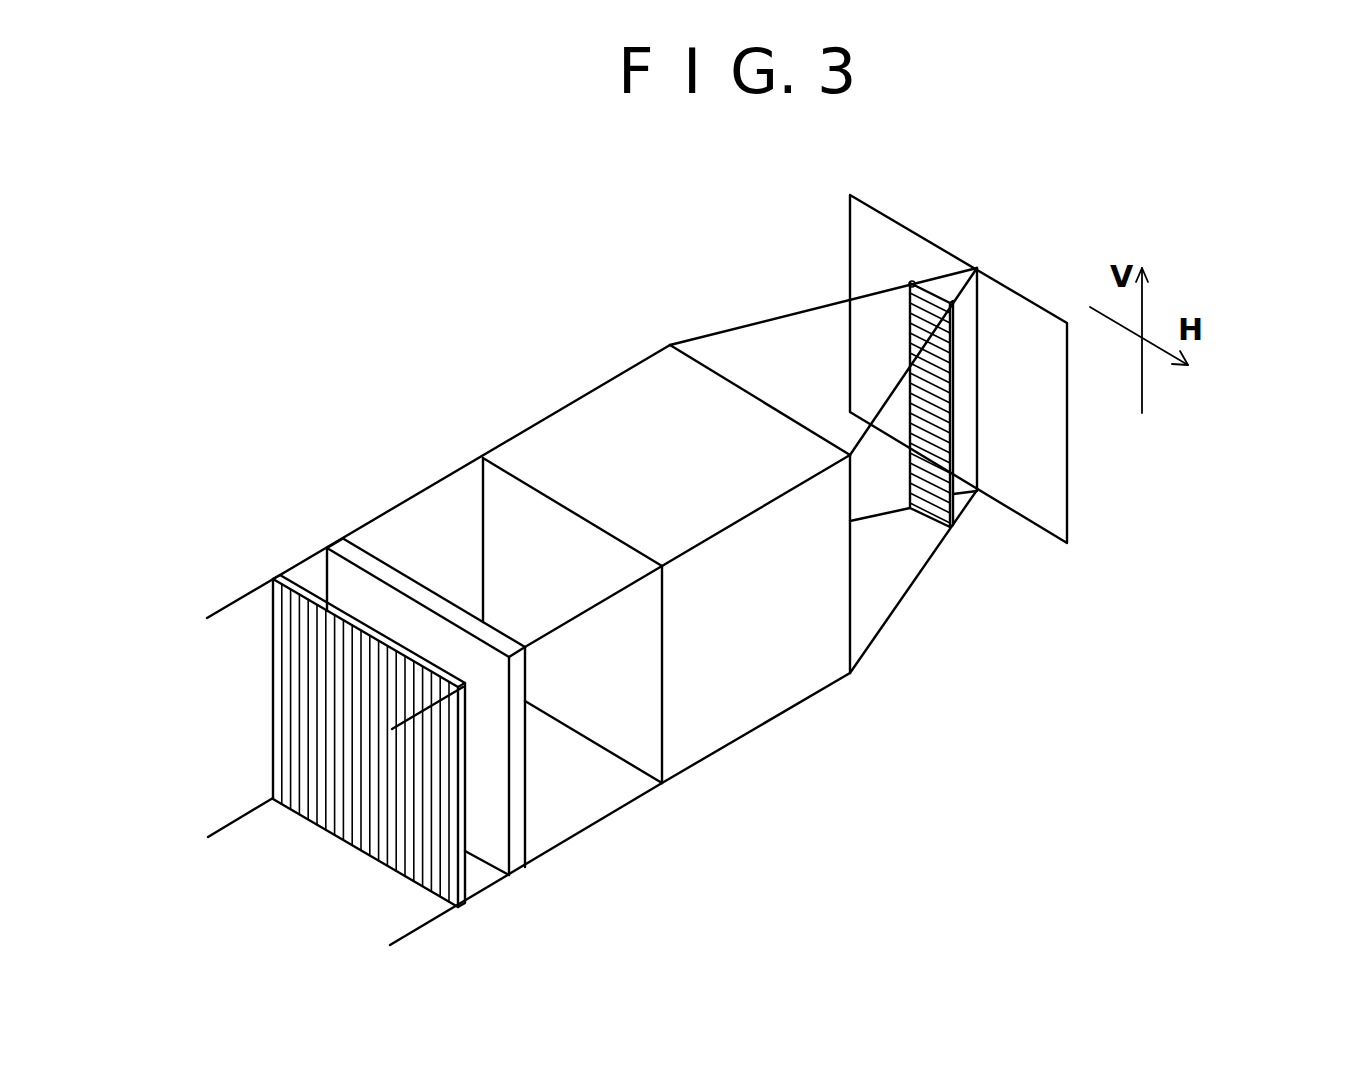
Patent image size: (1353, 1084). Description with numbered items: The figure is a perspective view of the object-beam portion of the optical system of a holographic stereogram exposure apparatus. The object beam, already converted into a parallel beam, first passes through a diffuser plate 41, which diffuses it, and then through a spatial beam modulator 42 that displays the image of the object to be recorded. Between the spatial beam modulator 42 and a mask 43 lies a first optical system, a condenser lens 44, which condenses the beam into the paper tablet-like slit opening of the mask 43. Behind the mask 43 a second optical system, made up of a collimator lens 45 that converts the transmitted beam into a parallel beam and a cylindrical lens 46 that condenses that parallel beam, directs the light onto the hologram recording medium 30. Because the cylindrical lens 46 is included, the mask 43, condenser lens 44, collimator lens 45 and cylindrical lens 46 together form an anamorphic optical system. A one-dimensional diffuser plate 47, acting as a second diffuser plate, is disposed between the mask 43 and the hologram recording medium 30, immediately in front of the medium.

The hologram recording medium 30 is at (1045, 533).
The diffuser plate 41 is at (278, 575).
The spatial beam modulator 42 is at (335, 540).
The mask 43 is at (604, 549).
The condenser lens 44 is at (604, 549).
The collimator lens 45 is at (604, 549).
The cylindrical lens 46 is at (550, 414).
The one-dimensional diffuser plate 47 is at (950, 528).